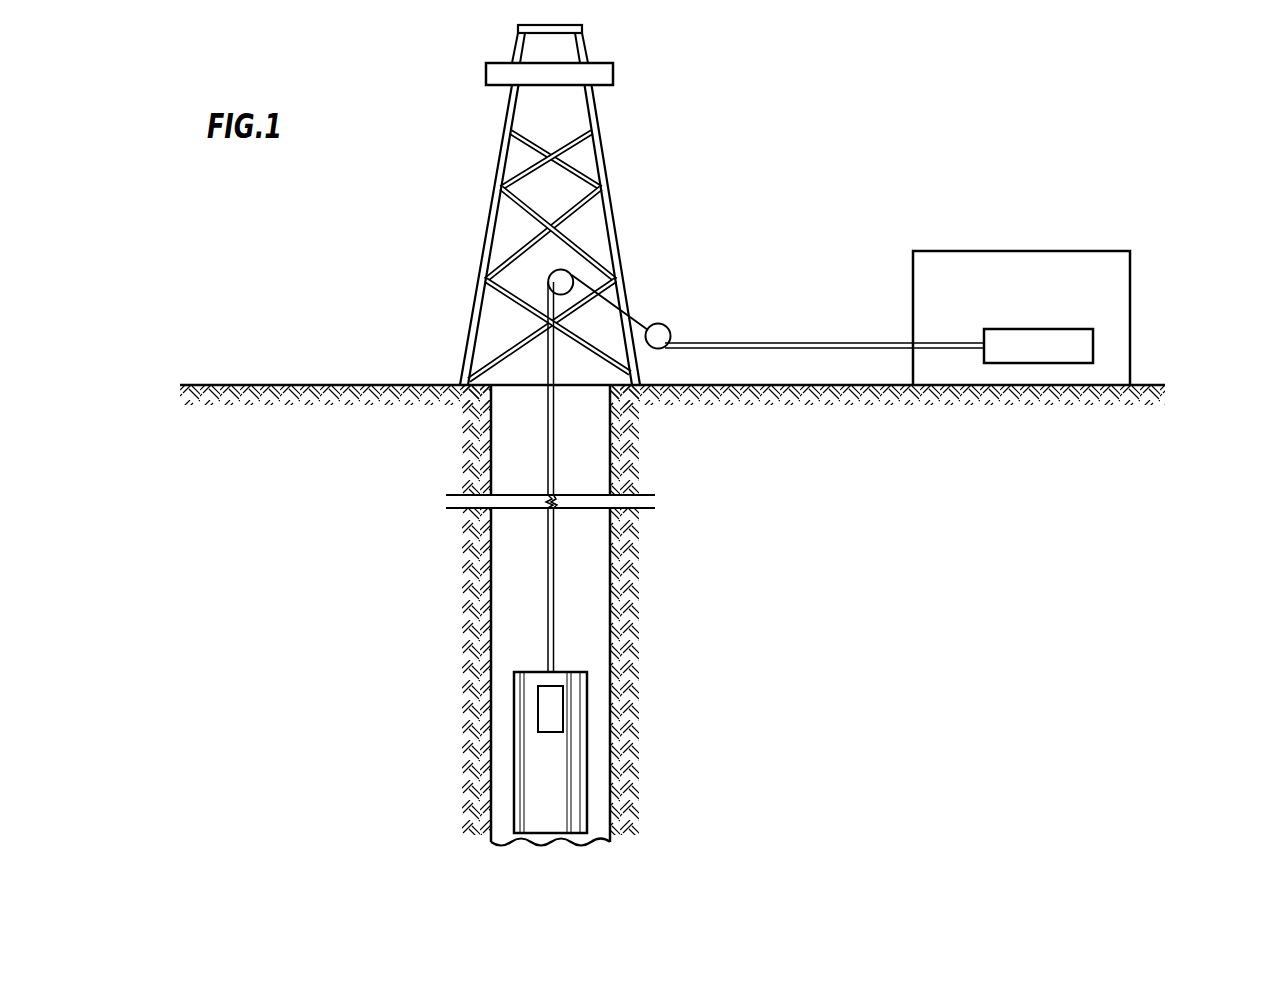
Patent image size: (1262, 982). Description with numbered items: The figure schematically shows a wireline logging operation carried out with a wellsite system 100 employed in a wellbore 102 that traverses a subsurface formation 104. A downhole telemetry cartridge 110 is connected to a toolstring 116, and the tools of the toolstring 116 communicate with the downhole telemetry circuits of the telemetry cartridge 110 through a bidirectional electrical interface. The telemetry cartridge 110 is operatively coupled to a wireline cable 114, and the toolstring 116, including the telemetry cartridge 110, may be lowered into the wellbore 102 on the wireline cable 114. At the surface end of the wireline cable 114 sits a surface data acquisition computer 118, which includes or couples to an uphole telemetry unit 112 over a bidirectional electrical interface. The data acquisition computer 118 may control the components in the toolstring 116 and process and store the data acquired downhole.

The wellsite system 100 is at (950, 111).
The wellbore 102 is at (622, 579).
The subsurface formation 104 is at (952, 587).
The downhole telemetry cartridge 110 is at (563, 700).
The uphole telemetry unit 112 is at (1095, 342).
The wireline cable 114 is at (813, 343).
The toolstring 116 is at (532, 835).
The surface data acquisition computer 118 is at (1078, 251).